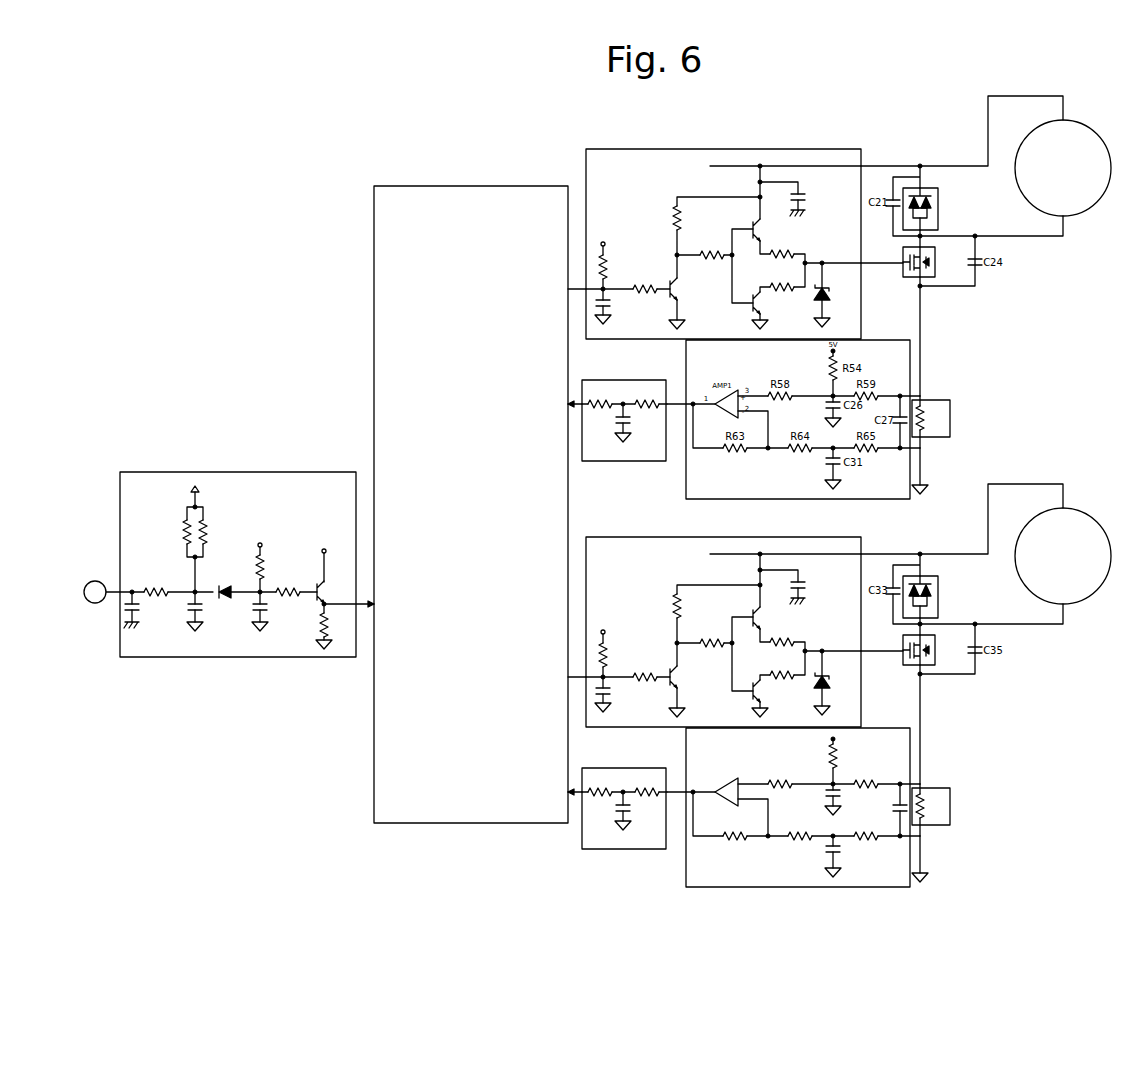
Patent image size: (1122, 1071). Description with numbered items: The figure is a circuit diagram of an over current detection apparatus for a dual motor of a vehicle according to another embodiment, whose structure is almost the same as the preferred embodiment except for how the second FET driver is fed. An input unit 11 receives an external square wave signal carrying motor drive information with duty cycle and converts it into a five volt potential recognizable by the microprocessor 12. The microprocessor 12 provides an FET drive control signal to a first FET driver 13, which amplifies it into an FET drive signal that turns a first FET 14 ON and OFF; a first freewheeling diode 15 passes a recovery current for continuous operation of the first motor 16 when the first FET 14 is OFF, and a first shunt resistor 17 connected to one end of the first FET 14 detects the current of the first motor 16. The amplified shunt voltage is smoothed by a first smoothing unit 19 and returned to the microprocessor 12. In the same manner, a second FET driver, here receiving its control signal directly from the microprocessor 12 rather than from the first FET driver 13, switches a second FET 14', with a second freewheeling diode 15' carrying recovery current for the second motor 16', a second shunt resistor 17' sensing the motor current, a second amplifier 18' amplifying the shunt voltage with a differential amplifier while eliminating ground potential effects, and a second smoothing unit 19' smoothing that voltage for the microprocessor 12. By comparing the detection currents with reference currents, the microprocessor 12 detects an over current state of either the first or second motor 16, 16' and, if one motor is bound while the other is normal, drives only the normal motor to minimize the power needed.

The input unit 11 is at (270, 472).
The microprocessor 12 is at (477, 186).
The first FET driver 13 is at (699, 244).
The first FET 14 is at (935, 283).
The second FET 14' is at (938, 671).
The first freewheeling diode 15 is at (938, 180).
The second freewheeling diode 15' is at (942, 568).
The first motor 16 is at (1065, 151).
The second motor 16' is at (1066, 536).
The first shunt resistor 17 is at (935, 403).
The second shunt resistor 17' is at (936, 791).
The second amplifier 18' is at (825, 798).
The first smoothing unit 19 is at (624, 400).
The second smoothing unit 19' is at (624, 788).